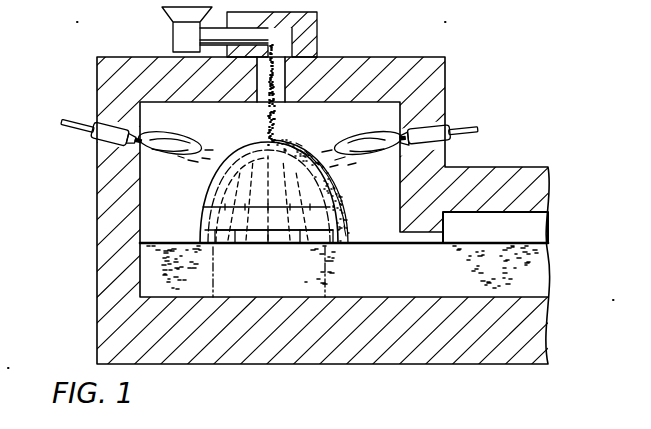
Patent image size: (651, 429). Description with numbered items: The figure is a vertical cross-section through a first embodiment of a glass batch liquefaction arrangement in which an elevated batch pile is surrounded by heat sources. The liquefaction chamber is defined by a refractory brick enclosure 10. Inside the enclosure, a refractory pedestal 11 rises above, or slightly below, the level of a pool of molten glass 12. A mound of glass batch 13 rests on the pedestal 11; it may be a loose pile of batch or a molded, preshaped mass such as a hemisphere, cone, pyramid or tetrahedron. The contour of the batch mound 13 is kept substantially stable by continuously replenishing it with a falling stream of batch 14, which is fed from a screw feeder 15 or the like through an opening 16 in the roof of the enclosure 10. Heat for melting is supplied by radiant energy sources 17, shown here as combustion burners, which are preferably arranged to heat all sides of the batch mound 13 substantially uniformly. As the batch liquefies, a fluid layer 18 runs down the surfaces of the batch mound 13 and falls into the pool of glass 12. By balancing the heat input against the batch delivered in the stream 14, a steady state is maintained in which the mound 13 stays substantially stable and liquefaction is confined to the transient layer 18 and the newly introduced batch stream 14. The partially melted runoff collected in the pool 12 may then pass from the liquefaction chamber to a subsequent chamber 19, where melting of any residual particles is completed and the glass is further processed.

The refractory brick enclosure 10 is at (97, 243).
The refractory pedestal 11 is at (208, 216).
The pool of molten glass 12 is at (382, 240).
The mound of glass batch 13 is at (300, 158).
The falling stream of batch 14 is at (276, 120).
The screw feeder 15 is at (172, 39).
The opening 16 is at (263, 86).
The radiant energy sources 17 is at (95, 133).
The fluid layer 18 is at (206, 196).
The subsequent chamber 19 is at (540, 224).